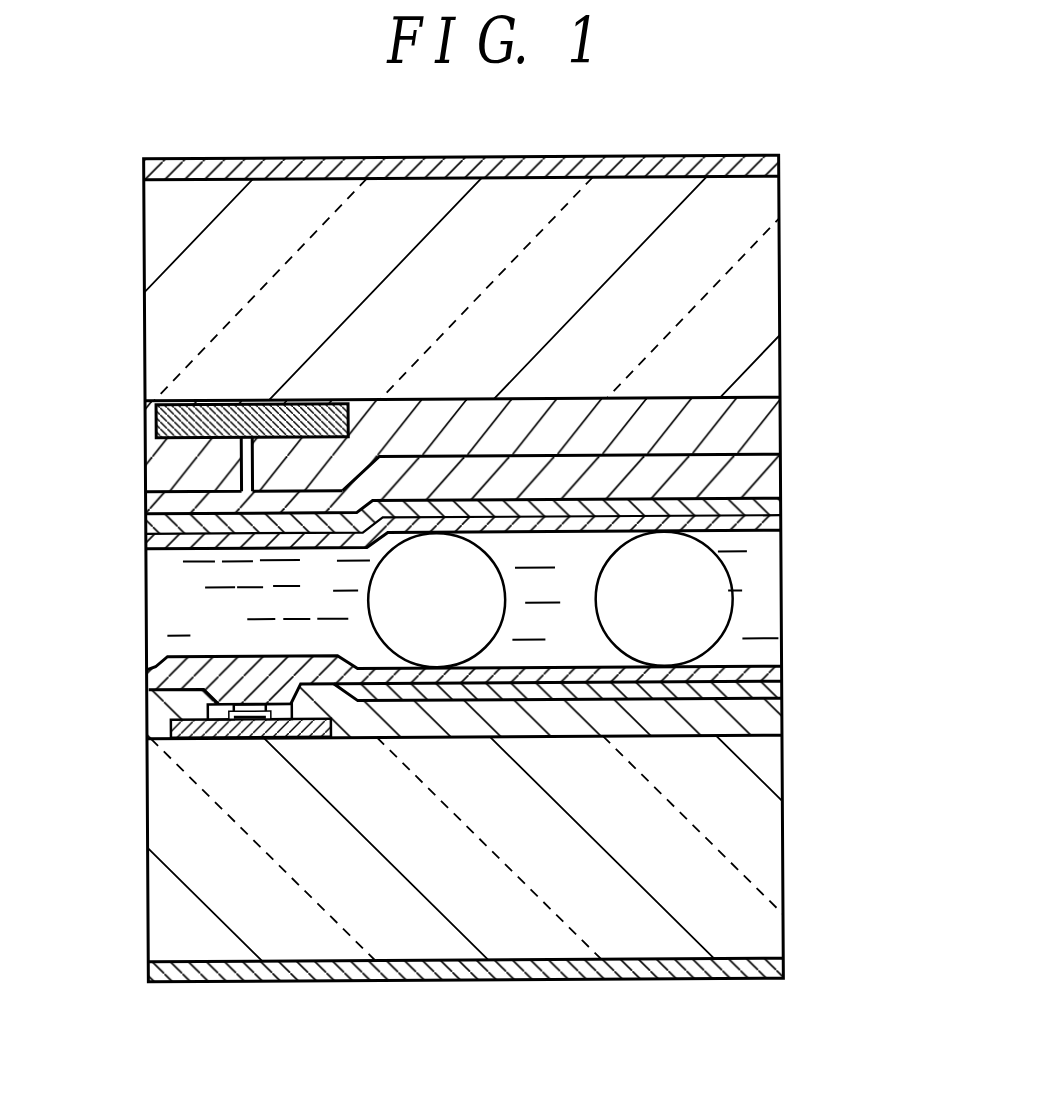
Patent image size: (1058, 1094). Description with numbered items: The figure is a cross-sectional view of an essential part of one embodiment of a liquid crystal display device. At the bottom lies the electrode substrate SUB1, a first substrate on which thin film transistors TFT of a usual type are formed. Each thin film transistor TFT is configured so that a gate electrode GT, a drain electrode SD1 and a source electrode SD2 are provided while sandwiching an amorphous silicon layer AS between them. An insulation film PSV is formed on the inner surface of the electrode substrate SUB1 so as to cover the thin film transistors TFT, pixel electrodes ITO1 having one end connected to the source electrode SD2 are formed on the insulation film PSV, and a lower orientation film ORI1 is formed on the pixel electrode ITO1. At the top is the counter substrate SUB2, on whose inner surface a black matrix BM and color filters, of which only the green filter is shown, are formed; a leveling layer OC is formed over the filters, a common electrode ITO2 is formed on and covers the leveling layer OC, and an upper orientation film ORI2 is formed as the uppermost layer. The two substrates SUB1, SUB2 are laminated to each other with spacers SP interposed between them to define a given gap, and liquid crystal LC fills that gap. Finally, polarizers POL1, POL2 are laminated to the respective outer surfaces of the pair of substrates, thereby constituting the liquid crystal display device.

The polarizer POL2 is at (783, 169).
The counter substrate SUB2 is at (783, 268).
The black matrix BM is at (236, 401).
The leveling layer OC is at (783, 481).
The common electrode ITO2 is at (783, 507).
The upper orientation film ORI2 is at (783, 519).
The spacer SP is at (712, 570).
The liquid crystal LC is at (766, 612).
The lower orientation film ORI1 is at (783, 685).
The pixel electrode ITO1 is at (783, 690).
The insulation film PSV is at (783, 720).
The thin film transistor TFT is at (252, 714).
The amorphous silicon layer AS is at (230, 706).
The gate electrode GT is at (260, 738).
The drain electrode SD1 is at (193, 745).
The source electrode SD2 is at (320, 738).
The electrode substrate SUB1 is at (783, 827).
The polarizer POL1 is at (783, 970).